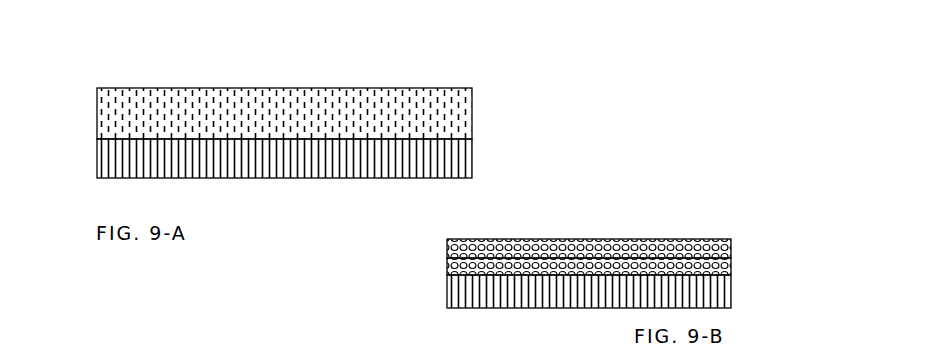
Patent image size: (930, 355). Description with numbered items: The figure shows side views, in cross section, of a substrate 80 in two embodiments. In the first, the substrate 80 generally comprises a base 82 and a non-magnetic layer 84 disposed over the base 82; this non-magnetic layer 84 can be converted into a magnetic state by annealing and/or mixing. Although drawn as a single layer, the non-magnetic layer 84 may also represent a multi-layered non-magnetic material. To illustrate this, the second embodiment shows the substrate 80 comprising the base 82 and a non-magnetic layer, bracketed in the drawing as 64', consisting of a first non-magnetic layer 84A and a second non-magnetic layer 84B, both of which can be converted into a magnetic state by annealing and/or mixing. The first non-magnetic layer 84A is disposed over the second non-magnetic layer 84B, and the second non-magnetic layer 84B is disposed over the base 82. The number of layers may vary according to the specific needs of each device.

In FIG. 9-A, the substrate 80 is at (95, 52).
In FIG. 9-B, the substrate 80 is at (636, 219).
In FIG. 9-A, the base 82 is at (473, 162).
In FIG. 9-B, the base 82 is at (731, 293).
In FIG. 9-A, the non-magnetic layer 84 is at (473, 117).
In FIG. 9-B, the first non-magnetic layer 84A is at (732, 247).
In FIG. 9-B, the second non-magnetic layer 84B is at (731, 266).
In FIG. 9-B, the multi-layer top coating 64' is at (555, 261).